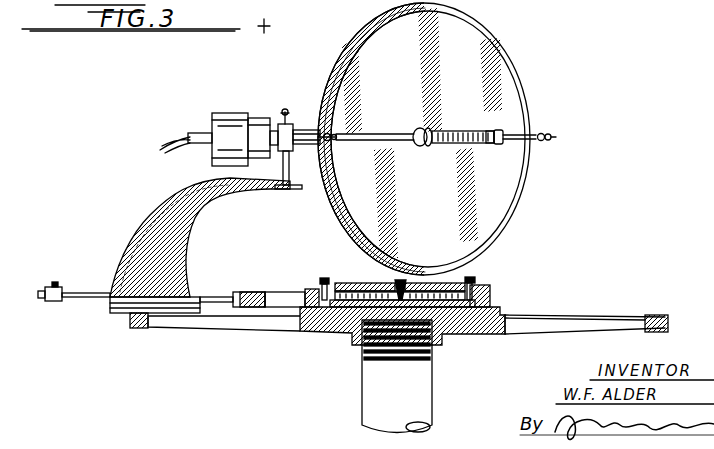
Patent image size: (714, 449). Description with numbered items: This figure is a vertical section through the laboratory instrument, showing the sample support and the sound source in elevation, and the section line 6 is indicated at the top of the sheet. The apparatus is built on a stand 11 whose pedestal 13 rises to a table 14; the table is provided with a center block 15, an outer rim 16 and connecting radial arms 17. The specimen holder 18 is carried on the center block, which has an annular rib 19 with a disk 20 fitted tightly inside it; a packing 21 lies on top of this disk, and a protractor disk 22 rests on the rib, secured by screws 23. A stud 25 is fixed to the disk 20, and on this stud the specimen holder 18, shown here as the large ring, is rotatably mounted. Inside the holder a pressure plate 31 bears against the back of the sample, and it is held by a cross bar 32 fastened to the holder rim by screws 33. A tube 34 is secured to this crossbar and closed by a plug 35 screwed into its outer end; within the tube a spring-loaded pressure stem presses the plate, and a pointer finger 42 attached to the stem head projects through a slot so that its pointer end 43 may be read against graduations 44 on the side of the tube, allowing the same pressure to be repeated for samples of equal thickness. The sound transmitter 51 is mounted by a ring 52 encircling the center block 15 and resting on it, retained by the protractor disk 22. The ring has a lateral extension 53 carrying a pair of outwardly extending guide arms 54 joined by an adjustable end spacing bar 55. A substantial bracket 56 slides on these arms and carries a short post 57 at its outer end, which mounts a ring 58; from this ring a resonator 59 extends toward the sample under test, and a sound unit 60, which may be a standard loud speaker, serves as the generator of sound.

The section line mark 6 is at (270, 26).
The stand 11 is at (348, 396).
The pedestal 13 is at (368, 413).
The table 14 is at (622, 310).
The center block 15 is at (472, 330).
The rim 16 is at (669, 320).
The radial arms 17 is at (220, 330).
The specimen holder 18 is at (533, 78).
The annular rib 19 is at (480, 296).
The disk 20 is at (320, 336).
The packing 21 is at (362, 300).
The protractor disk 22 is at (455, 290).
The screws 23 is at (465, 290).
The stud 25 is at (405, 283).
The pressure plate 31 is at (428, 208).
The cross bar 32 is at (386, 135).
The screws 33 is at (332, 141).
The tube 34 is at (504, 144).
The plug 35 is at (524, 140).
The pointer finger 42 is at (478, 143).
The pointer end 43 is at (430, 143).
The graduations 44 is at (455, 132).
The sound transmitter 51 is at (198, 113).
The ring 52 is at (306, 291).
The lateral extension 53 is at (247, 292).
The guide arms 54 is at (90, 305).
The end spacing bar 55 is at (52, 302).
The bracket 56 is at (127, 223).
The post 57 is at (282, 183).
The ring 58 is at (289, 111).
The resonator 59 is at (258, 117).
The sound unit 60 is at (226, 112).